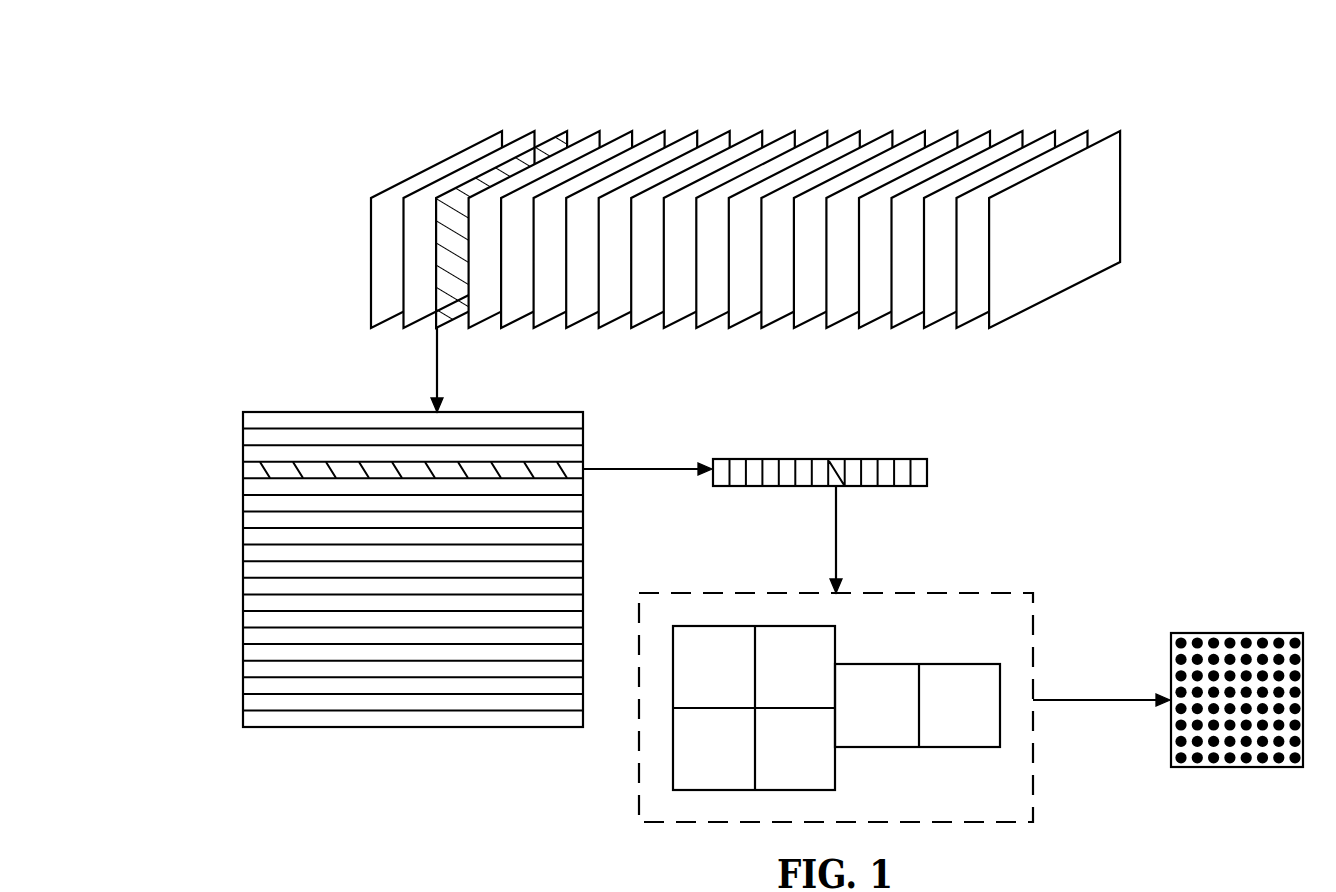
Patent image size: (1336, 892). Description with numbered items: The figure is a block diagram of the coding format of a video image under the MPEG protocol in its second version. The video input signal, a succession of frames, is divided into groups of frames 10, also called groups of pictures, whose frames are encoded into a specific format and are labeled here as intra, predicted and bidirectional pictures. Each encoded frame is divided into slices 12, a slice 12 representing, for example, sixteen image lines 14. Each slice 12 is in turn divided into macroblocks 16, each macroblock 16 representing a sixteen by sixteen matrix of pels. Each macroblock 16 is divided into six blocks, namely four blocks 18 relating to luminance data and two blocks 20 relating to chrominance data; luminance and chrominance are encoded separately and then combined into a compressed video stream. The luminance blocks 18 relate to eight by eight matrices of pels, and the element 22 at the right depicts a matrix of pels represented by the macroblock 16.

The group of frames 10 is at (1163, 77).
The slice 12 is at (575, 420).
The image lines 14 is at (330, 463).
The macroblock 16 is at (722, 470).
The luminance blocks 18 is at (809, 762).
The chrominance blocks 20 is at (974, 718).
The block of pixels 22 is at (1213, 640).